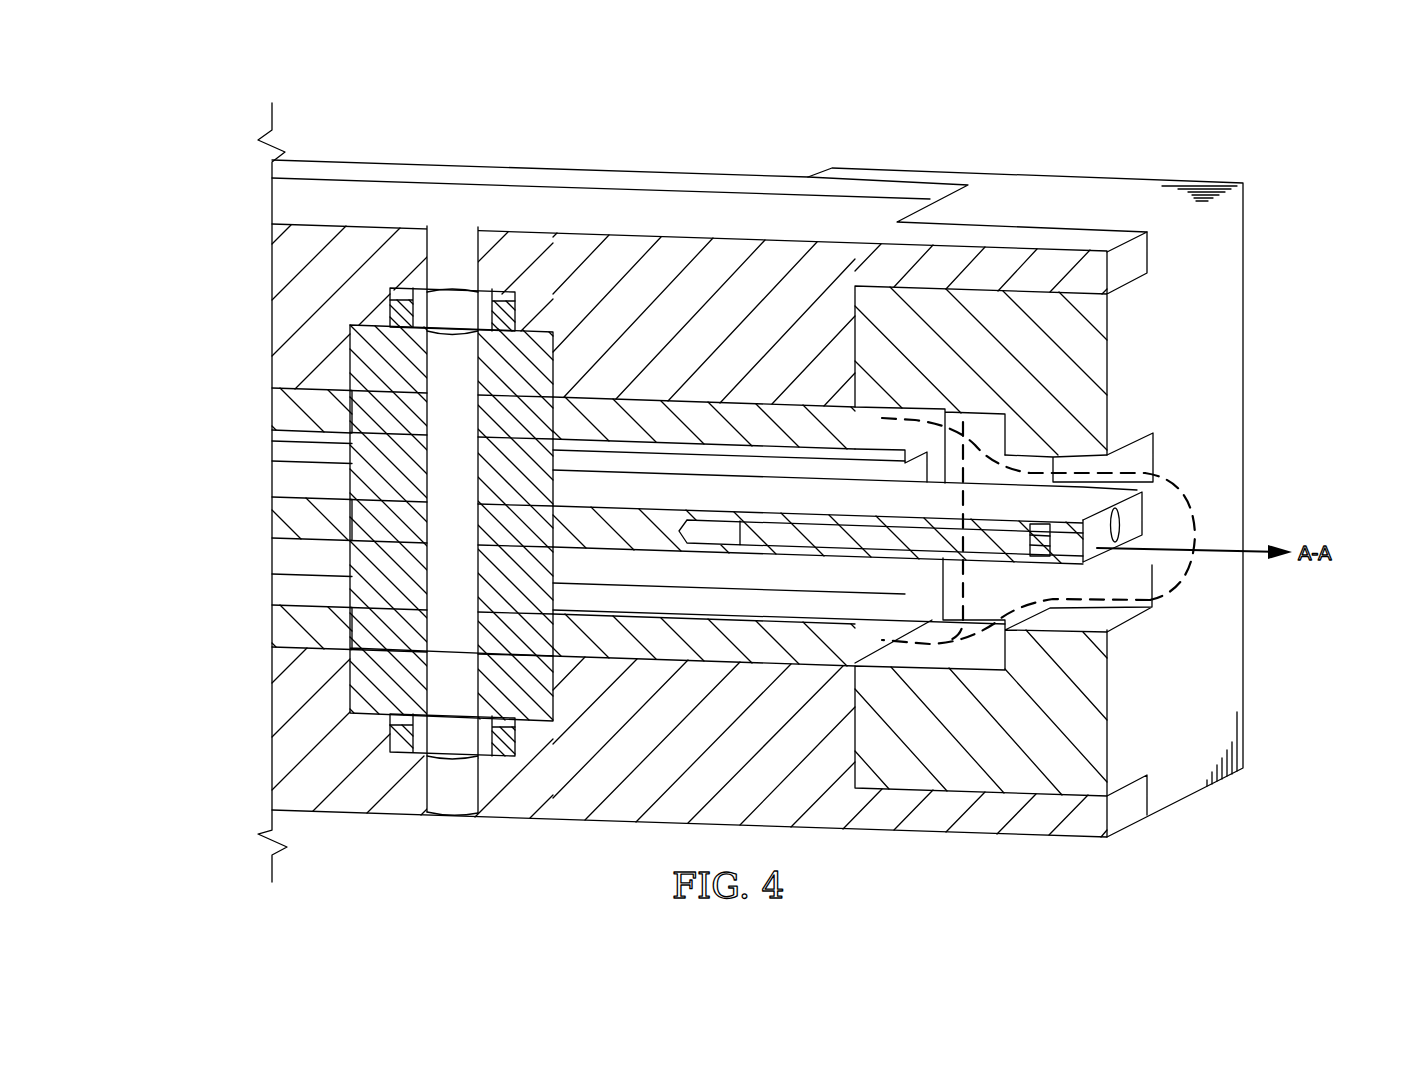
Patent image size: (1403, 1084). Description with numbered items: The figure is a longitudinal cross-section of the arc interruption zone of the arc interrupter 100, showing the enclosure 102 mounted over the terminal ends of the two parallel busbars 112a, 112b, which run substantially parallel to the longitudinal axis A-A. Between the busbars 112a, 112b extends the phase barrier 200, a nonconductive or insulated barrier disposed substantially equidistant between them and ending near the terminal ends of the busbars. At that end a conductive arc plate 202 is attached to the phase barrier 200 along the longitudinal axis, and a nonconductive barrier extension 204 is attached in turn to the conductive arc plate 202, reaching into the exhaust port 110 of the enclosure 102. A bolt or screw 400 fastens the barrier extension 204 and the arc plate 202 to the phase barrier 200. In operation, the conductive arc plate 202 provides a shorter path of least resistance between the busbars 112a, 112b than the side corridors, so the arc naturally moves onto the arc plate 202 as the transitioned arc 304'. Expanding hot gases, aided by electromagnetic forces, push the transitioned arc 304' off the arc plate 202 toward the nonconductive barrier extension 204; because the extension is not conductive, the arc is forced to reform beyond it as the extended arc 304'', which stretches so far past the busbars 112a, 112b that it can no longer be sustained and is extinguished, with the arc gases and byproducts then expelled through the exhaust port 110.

The arc interrupter 100 is at (1338, 154).
The enclosure 102 is at (650, 222).
The exhaust port 110 is at (1147, 452).
The busbar 112a is at (280, 408).
The busbar 112b is at (280, 629).
The phase barrier 200 is at (280, 526).
The conductive arc plate 202 is at (865, 486).
The nonconductive barrier extension 204 is at (1142, 517).
The transitioned arc 304' is at (1016, 531).
The extended arc 304'' is at (1183, 553).
The bolt or screw 400 is at (868, 540).